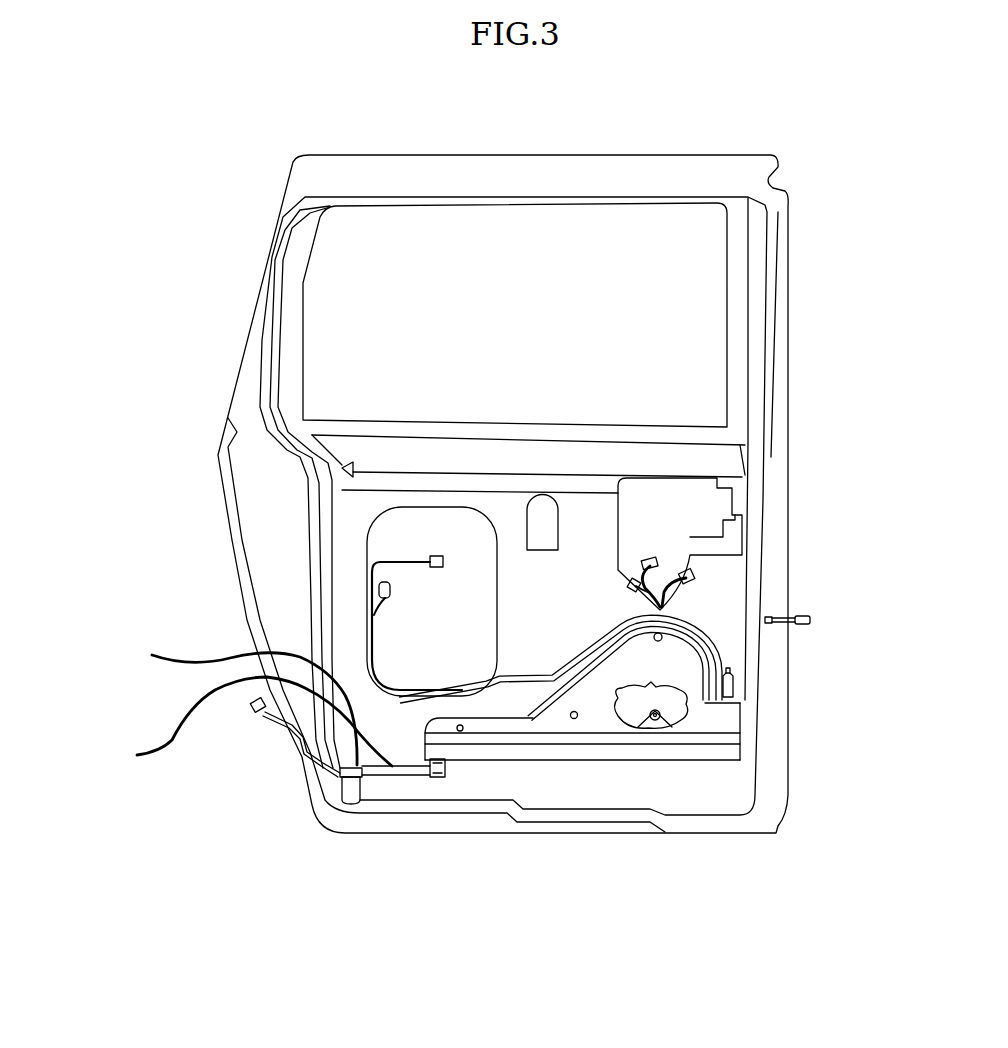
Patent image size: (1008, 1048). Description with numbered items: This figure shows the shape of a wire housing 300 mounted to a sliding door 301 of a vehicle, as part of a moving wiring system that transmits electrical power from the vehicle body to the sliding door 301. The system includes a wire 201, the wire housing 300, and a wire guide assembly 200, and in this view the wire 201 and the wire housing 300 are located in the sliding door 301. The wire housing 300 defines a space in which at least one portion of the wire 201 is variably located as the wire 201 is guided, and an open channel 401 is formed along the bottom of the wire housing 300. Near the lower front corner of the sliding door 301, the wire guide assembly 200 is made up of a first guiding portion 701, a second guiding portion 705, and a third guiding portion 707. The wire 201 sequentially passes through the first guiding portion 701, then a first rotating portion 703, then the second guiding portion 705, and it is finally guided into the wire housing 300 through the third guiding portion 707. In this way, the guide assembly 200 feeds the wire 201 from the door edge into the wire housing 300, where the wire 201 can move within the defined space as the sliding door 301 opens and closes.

The wire guide assembly 200 is at (396, 779).
The wire 201 is at (532, 683).
The wire housing 300 is at (713, 722).
The sliding door 301 is at (778, 410).
The open channel 401 is at (718, 760).
The first guiding portion 701 is at (350, 793).
The first rotating portion 703 is at (222, 727).
The second guiding portion 705 is at (210, 702).
The third guiding portion 707 is at (447, 768).